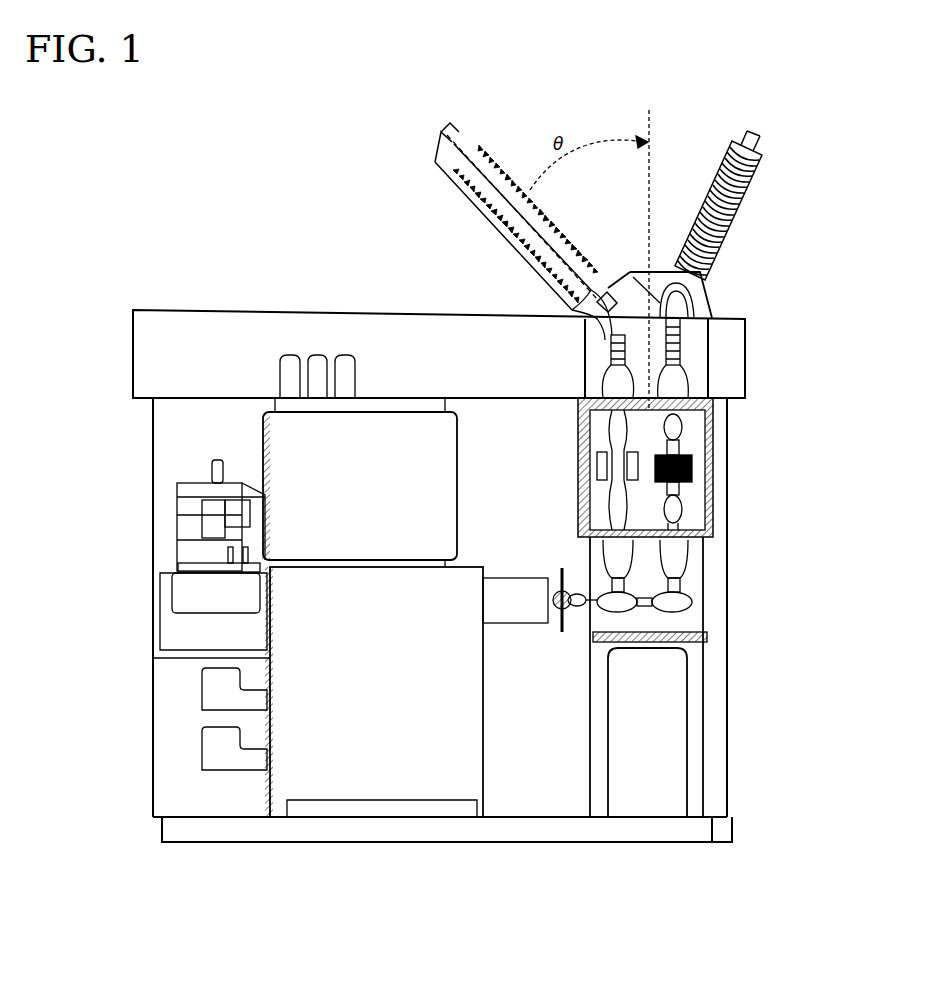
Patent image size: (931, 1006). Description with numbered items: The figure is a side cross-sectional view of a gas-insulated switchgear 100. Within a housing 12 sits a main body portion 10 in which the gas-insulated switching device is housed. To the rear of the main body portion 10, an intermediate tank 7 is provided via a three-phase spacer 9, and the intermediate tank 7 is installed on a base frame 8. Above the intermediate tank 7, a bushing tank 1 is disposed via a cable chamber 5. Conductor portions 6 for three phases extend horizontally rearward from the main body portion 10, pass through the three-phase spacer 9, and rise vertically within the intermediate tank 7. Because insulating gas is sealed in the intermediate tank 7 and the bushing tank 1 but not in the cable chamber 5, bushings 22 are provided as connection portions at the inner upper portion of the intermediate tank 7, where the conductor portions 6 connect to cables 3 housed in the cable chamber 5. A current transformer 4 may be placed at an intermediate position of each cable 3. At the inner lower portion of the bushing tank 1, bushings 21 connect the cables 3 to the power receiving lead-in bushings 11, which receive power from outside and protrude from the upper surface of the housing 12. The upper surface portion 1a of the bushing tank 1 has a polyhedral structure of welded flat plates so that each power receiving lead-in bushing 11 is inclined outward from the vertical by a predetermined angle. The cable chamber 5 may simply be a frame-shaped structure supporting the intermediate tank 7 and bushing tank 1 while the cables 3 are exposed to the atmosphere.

The gas-insulated switchgear 100 is at (262, 207).
The bushing tank 1 is at (711, 296).
The upper surface portion 1a is at (665, 306).
The power receiving lead-in bushing 11 is at (729, 243).
The bushing 21 is at (683, 375).
The cable 3 is at (678, 432).
The current transformer 4 is at (683, 470).
The cable chamber 5 is at (712, 503).
The bushing 22 is at (683, 558).
The conductor portion 6 is at (690, 598).
The intermediate tank 7 is at (705, 629).
The base frame 8 is at (695, 750).
The three-phase spacer 9 is at (565, 632).
The main body portion 10 is at (280, 665).
The housing 12 is at (153, 769).